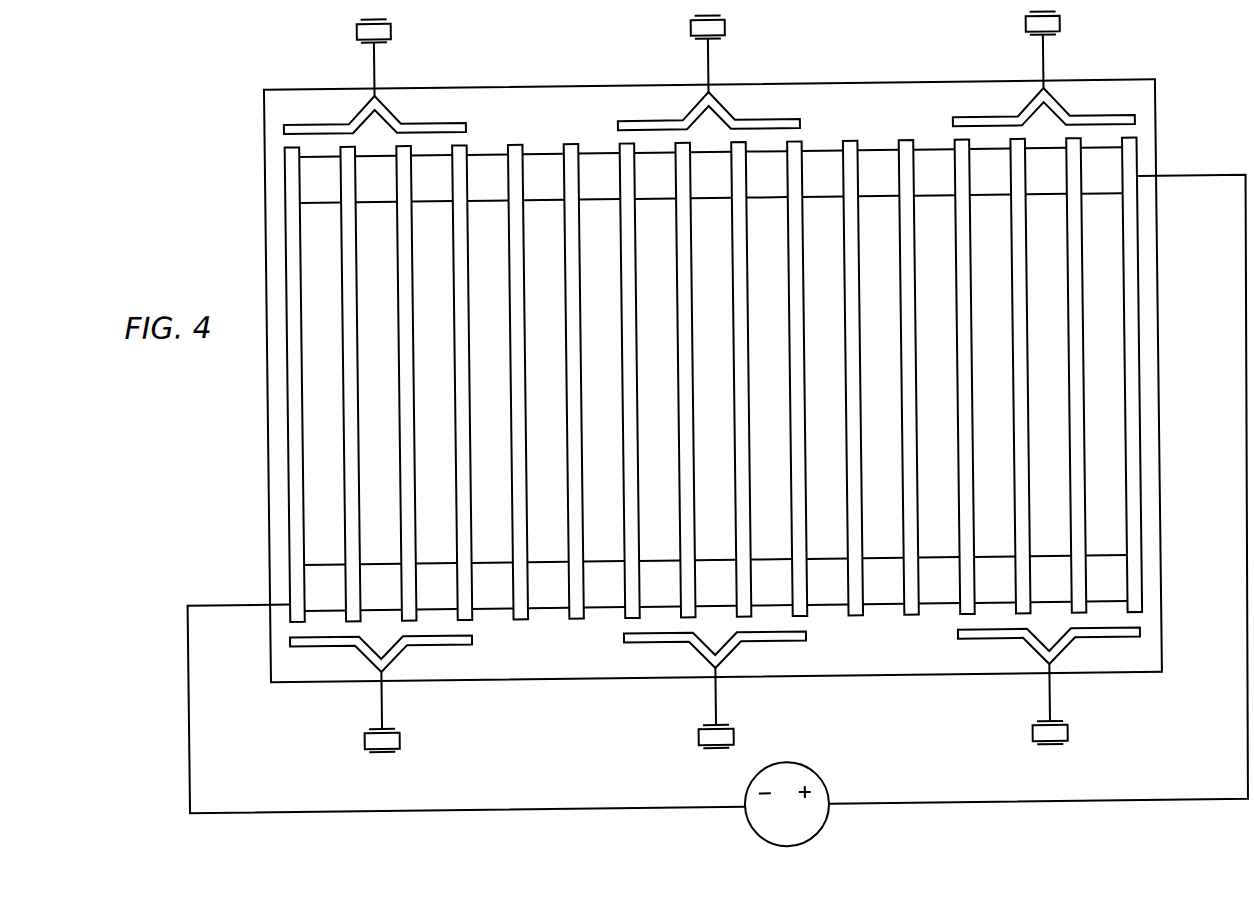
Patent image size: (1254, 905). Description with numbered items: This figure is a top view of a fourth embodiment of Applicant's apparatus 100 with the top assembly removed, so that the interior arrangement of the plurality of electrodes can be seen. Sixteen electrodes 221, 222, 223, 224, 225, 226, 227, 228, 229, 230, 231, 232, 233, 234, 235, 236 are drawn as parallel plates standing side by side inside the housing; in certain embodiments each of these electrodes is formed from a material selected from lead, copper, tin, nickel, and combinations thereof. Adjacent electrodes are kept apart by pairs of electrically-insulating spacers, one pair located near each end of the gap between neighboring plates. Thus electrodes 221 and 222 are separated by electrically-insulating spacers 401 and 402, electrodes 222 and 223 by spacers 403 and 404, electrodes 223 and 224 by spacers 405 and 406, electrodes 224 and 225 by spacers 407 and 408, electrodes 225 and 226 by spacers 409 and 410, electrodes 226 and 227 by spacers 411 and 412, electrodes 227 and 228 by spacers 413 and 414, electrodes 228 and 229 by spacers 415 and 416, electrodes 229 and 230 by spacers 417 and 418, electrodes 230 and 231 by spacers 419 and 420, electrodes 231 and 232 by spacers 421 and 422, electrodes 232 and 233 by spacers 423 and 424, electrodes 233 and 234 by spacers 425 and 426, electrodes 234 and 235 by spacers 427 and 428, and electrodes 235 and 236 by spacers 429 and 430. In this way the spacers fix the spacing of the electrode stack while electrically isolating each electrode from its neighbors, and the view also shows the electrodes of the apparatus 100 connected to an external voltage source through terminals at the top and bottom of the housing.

The electrostatic fluid accelerator system 100 is at (717, 448).
The electrode 221 is at (302, 338).
The electrode 222 is at (358, 337).
The electrode 223 is at (414, 335).
The electrode 224 is at (470, 334).
The electrode 225 is at (525, 332).
The electrode 226 is at (581, 331).
The electrode 227 is at (637, 330).
The electrode 228 is at (693, 328).
The electrode 229 is at (749, 327).
The electrode 230 is at (804, 325).
The electrode 231 is at (860, 324).
The electrode 232 is at (916, 323).
The electrode 233 is at (972, 321).
The electrode 234 is at (1028, 320).
The electrode 235 is at (1084, 318).
The electrode 236 is at (1131, 308).
The electrically-insulating spacer 401 is at (325, 587).
The electrically-insulating spacer 402 is at (320, 179).
The electrically-insulating spacer 403 is at (381, 587).
The electrically-insulating spacer 404 is at (376, 179).
The electrically-insulating spacer 405 is at (436, 586).
The electrically-insulating spacer 406 is at (432, 178).
The electrically-insulating spacer 407 is at (492, 585).
The electrically-insulating spacer 408 is at (487, 177).
The electrically-insulating spacer 409 is at (548, 585).
The electrically-insulating spacer 410 is at (543, 177).
The electrically-insulating spacer 411 is at (604, 584).
The electrically-insulating spacer 412 is at (599, 176).
The electrically-insulating spacer 413 is at (660, 583).
The electrically-insulating spacer 414 is at (655, 175).
The electrically-insulating spacer 415 is at (716, 583).
The electrically-insulating spacer 416 is at (711, 175).
The electrically-insulating spacer 417 is at (771, 582).
The electrically-insulating spacer 418 is at (767, 174).
The electrically-insulating spacer 419 is at (827, 581).
The electrically-insulating spacer 420 is at (822, 173).
The electrically-insulating spacer 421 is at (883, 581).
The electrically-insulating spacer 422 is at (878, 173).
The electrically-insulating spacer 423 is at (939, 580).
The electrically-insulating spacer 424 is at (934, 172).
The electrically-insulating spacer 425 is at (995, 579).
The electrically-insulating spacer 426 is at (990, 171).
The electrically-insulating spacer 427 is at (1051, 579).
The electrically-insulating spacer 428 is at (1046, 171).
The electrically-insulating spacer 429 is at (1106, 578).
The electrically-insulating spacer 430 is at (1102, 170).